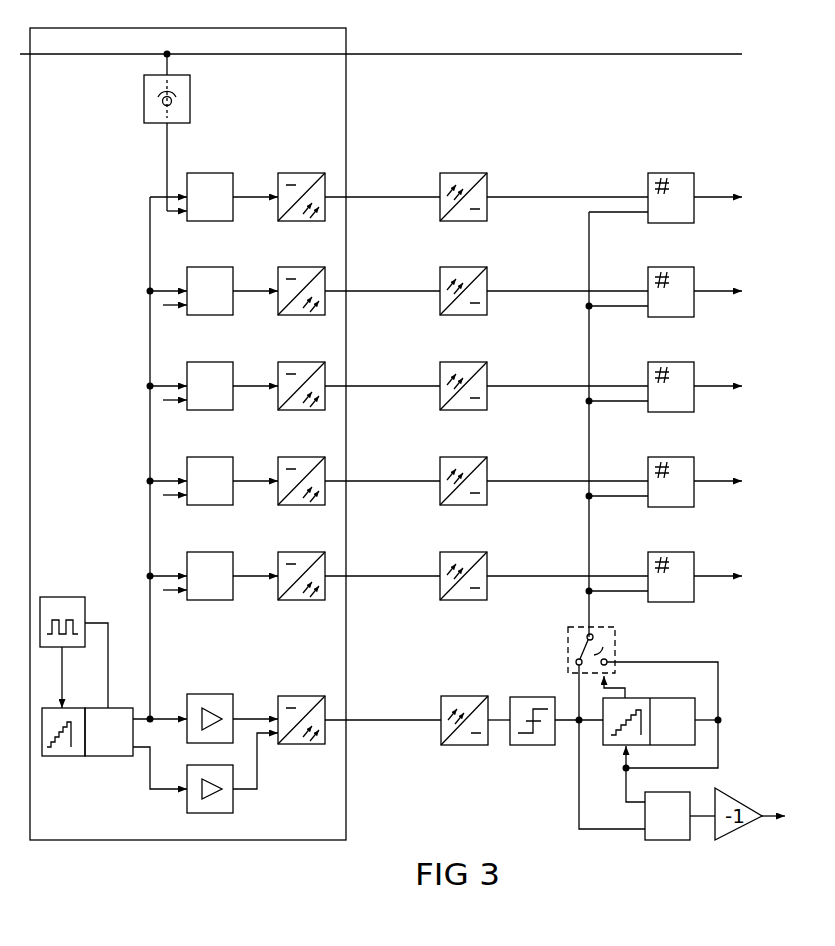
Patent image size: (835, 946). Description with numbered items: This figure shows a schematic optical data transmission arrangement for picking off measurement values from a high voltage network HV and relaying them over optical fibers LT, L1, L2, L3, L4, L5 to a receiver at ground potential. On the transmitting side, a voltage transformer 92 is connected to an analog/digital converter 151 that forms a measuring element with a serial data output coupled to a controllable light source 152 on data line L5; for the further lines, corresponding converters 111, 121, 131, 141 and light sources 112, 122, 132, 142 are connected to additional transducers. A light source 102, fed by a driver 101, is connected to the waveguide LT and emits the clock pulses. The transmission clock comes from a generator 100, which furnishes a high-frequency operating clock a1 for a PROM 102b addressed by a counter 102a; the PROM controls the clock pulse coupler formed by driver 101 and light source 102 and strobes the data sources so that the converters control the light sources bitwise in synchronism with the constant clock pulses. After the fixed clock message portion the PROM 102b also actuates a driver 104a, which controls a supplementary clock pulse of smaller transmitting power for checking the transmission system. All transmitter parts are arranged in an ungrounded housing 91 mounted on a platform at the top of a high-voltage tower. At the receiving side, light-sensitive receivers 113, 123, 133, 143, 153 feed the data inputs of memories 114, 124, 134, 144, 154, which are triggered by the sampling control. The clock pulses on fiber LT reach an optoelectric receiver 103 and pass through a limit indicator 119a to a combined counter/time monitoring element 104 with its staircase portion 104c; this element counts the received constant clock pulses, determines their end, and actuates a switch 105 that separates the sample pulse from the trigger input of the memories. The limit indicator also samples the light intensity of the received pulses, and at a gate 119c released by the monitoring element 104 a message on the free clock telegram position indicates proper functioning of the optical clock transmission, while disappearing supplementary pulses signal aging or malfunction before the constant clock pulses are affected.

The housing 91 is at (346, 110).
The voltage transformer 92 is at (190, 102).
The transmission clock generator 100 is at (66, 597).
The driver 101 is at (210, 694).
The light source 102 is at (295, 696).
The counter 102a is at (55, 756).
The PROM 102b is at (100, 756).
The optoelectric receiver 103 is at (465, 696).
The counter/time monitoring element 104 is at (610, 739).
The driver 104a is at (233, 800).
The staircase generator 104c is at (603, 738).
The switch 105 is at (615, 642).
The analog/digital converter 111 is at (213, 558).
The light source 112 is at (305, 558).
The light-sensitive receiver 113 is at (470, 558).
The memory 114 is at (675, 559).
The analog/digital converter 121 is at (213, 463).
The light source 122 is at (305, 463).
The light-sensitive receiver 123 is at (470, 463).
The memory 124 is at (675, 464).
The analog/digital converter 131 is at (213, 368).
The light source 132 is at (305, 368).
The light-sensitive receiver 133 is at (470, 368).
The memory 134 is at (675, 369).
The analog/digital converter 141 is at (213, 273).
The light source 142 is at (305, 273).
The light-sensitive receiver 143 is at (470, 273).
The memory 144 is at (675, 274).
The analog/digital converter 151 is at (203, 173).
The light source 152 is at (295, 173).
The light-sensitive receiver 153 is at (462, 173).
The memory 154 is at (668, 173).
The limit indicator 119a is at (535, 745).
The gate 119c is at (663, 840).
The optical fiber L1 is at (382, 557).
The optical fiber L2 is at (382, 462).
The optical fiber L3 is at (382, 367).
The optical fiber L4 is at (382, 272).
The optical fiber L5 is at (388, 197).
The optical fiber LT is at (389, 720).
The high voltage network HV is at (486, 54).
The operating clock a1 is at (108, 636).